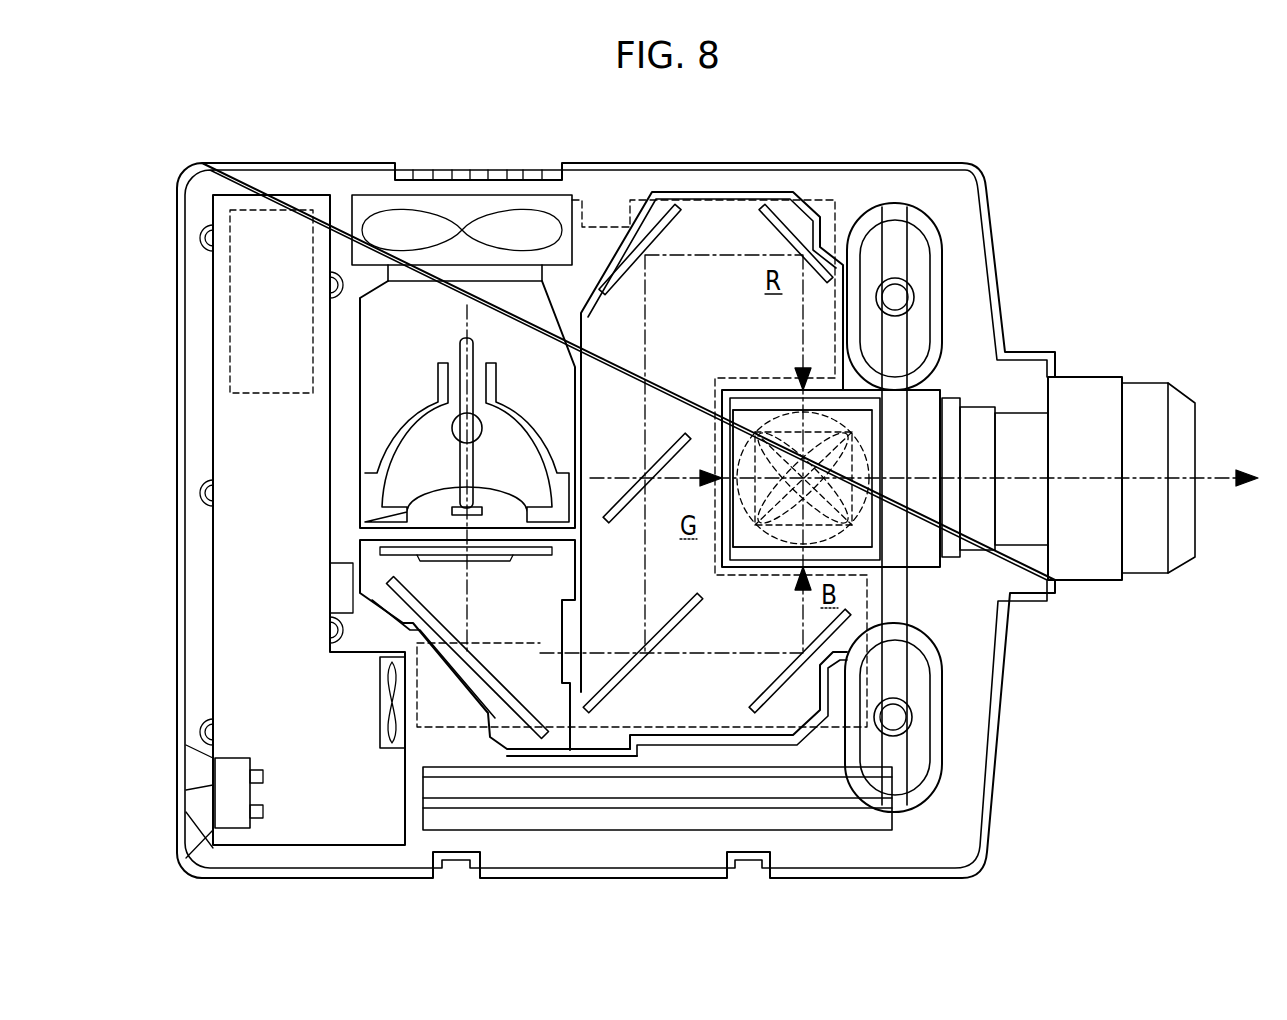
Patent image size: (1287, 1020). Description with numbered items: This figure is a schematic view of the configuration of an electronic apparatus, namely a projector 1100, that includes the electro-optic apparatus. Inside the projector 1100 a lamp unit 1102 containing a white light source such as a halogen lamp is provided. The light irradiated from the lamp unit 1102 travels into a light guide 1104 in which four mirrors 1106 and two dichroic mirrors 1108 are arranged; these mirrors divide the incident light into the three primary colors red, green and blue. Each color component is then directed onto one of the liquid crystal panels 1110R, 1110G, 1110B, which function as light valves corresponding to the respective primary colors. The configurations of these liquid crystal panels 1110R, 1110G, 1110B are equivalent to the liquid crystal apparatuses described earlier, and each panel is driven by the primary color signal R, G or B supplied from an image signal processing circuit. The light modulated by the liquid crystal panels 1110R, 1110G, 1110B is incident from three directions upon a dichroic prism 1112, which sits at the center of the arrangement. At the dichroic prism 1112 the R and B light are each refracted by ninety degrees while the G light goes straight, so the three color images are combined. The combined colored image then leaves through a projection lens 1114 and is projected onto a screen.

The projector 1100 is at (1055, 104).
The lamp unit 1102 is at (517, 305).
The light guide 1104 is at (650, 215).
The mirror 1106 is at (762, 210).
The dichroic mirror 1108 is at (665, 615).
The liquid crystal panel 1110R is at (751, 397).
The liquid crystal panel 1110G is at (729, 413).
The liquid crystal panel 1110B is at (755, 572).
The dichroic prism 1112 is at (878, 520).
The projection lens 1114 is at (1147, 395).